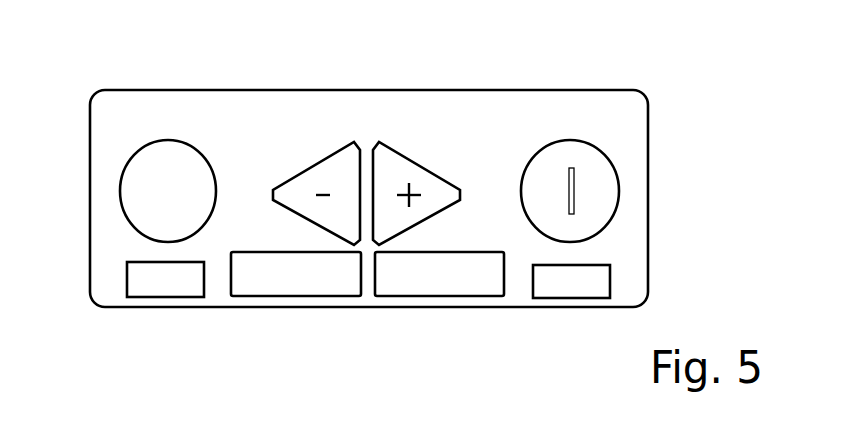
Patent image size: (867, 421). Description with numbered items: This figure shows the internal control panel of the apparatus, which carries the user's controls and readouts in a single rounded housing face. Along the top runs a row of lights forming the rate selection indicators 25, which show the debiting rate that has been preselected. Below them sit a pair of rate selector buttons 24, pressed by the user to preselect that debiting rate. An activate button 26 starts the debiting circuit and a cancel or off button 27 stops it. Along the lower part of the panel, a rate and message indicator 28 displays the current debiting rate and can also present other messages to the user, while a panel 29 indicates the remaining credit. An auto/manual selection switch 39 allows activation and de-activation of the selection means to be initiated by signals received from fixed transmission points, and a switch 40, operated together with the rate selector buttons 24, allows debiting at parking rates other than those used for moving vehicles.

The rate selector buttons 24 is at (385, 169).
The rate selection indicators 25 is at (262, 99).
The activate button 26 is at (603, 185).
The cancel or off button 27 is at (130, 185).
The rate and message indicator 28 is at (412, 283).
The remaining credit panel 29 is at (339, 283).
The auto/manual selection switch 39 is at (592, 274).
The parking mode switch 40 is at (146, 277).